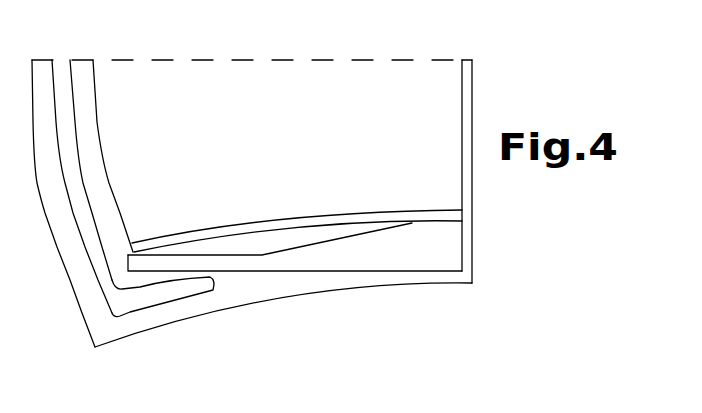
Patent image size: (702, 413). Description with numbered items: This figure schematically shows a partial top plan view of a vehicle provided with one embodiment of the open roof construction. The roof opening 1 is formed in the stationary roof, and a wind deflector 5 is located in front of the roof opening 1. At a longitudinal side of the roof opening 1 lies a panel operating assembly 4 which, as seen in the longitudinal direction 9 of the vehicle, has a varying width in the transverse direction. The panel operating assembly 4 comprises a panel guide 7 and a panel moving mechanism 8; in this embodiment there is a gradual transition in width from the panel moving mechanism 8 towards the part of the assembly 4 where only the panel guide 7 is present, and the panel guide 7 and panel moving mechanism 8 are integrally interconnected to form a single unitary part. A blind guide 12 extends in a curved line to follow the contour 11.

The roof opening 1 is at (257, 100).
The panel operating assembly 4 is at (312, 271).
The wind deflector 5 is at (62, 72).
The panel guide 7 is at (223, 267).
The panel moving mechanism 8 is at (403, 250).
The longitudinal direction 9 is at (405, 61).
The contour 11 is at (145, 332).
The blind guide 12 is at (257, 228).